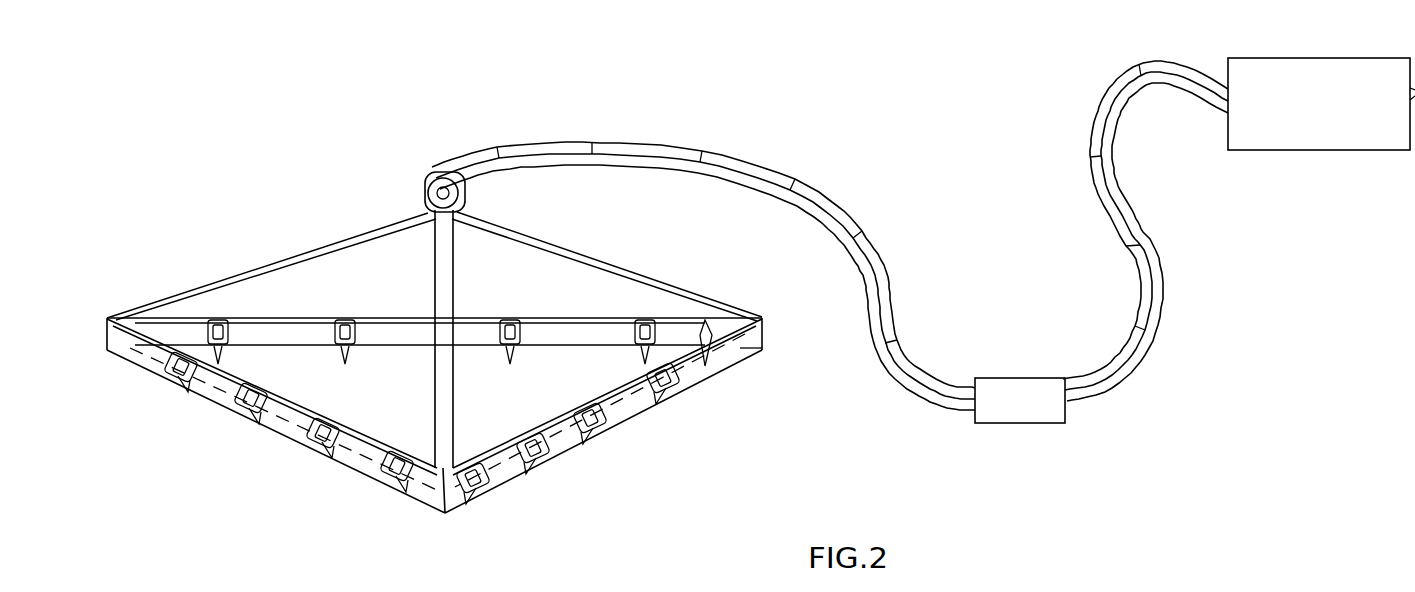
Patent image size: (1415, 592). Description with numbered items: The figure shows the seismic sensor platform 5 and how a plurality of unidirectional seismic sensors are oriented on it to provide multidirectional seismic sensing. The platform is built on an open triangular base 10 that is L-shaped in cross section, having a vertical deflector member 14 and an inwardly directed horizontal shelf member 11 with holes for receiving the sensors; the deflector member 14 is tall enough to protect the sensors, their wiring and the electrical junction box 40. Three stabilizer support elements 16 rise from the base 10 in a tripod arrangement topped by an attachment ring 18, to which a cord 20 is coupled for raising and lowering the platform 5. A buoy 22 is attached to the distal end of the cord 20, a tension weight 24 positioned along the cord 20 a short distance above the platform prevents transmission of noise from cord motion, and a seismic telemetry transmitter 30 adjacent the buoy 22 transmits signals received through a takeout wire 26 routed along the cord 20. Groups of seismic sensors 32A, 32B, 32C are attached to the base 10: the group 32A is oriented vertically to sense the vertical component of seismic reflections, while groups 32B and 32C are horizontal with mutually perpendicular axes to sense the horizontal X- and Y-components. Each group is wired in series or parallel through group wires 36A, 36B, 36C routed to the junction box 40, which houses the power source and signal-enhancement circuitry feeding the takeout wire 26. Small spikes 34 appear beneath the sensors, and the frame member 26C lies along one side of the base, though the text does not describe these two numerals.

The seismic sensor platform 5 is at (373, 217).
The open triangular base 10 is at (245, 433).
The horizontal shelf member 11 is at (411, 349).
The vertical deflector member 14 is at (128, 317).
The stabilizer support elements 16 is at (454, 252).
The attachment ring 18 is at (466, 192).
The cord 20 is at (1105, 90).
The buoy 22 is at (1270, 151).
The tension weight 24 is at (1018, 376).
The takeout wire 26 is at (1113, 173).
The frame side member 26C is at (437, 501).
The seismic telemetry transmitter 30 is at (1321, 130).
The group of seismic sensors 32A is at (353, 322).
The group of seismic sensors 32B is at (600, 432).
The group of seismic sensors 32C is at (180, 360).
The sensor spikes 34 is at (510, 352).
The group wire 36A is at (263, 323).
The group wire 36B is at (605, 426).
The group wire 36C is at (333, 447).
The electrical junction box 40 is at (737, 361).